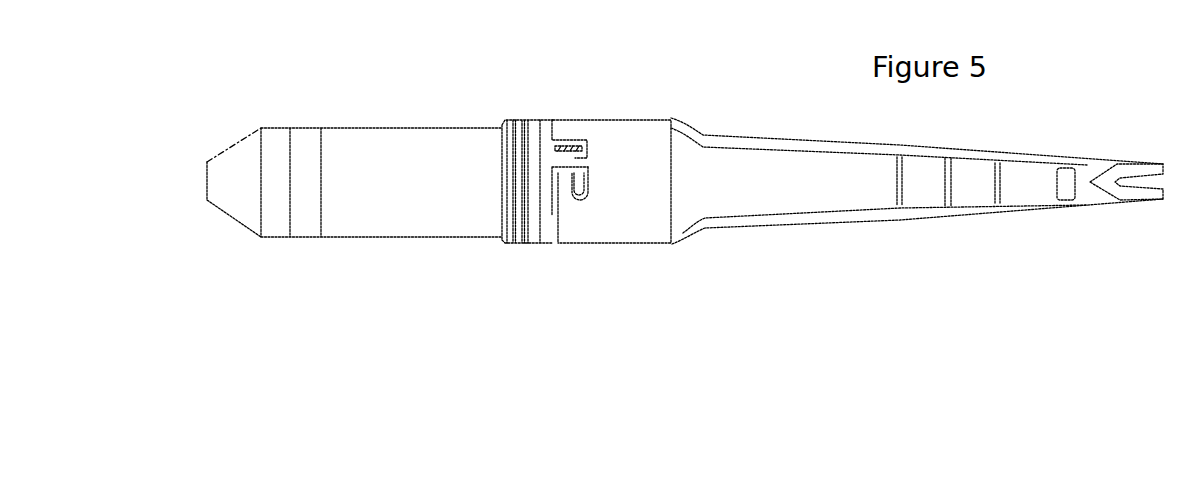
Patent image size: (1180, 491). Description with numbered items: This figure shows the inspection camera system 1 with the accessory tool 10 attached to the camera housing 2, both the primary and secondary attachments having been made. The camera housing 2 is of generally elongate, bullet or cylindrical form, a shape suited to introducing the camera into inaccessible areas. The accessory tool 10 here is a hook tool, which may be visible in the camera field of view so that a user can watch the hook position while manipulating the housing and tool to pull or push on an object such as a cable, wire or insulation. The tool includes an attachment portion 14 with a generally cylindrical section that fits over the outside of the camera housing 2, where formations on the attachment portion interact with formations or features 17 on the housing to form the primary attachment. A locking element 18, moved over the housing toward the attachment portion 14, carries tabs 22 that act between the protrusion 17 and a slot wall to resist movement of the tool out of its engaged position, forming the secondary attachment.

The device 1 is at (330, 100).
The camera housing 2 is at (400, 198).
The accessory tool 10 is at (882, 198).
The attachment portion 14 is at (660, 198).
The formations or features 17 is at (585, 182).
The locking element 18 is at (537, 223).
The tabs 22 is at (588, 147).